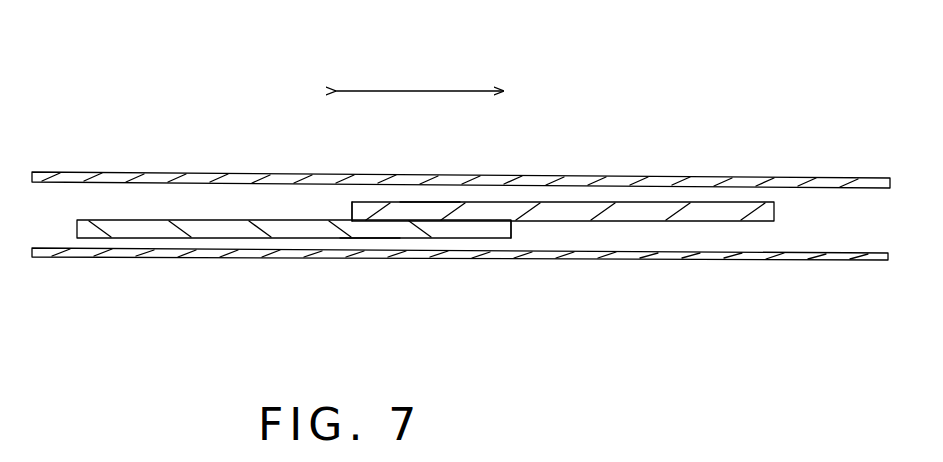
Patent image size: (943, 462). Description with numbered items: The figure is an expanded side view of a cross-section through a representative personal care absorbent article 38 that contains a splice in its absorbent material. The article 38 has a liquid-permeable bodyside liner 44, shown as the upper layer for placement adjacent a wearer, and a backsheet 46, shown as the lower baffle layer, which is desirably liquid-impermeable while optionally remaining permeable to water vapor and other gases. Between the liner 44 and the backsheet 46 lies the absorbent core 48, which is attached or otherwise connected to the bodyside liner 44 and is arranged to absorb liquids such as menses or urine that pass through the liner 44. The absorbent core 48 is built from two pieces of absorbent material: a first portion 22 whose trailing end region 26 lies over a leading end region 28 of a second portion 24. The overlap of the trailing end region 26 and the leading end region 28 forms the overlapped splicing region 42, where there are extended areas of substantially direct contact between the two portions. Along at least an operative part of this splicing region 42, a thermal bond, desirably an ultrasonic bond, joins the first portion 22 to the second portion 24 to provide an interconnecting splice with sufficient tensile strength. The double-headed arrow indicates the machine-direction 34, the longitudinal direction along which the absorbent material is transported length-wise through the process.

The first portion of absorbent material 22 is at (90, 220).
The second portion of absorbent material 24 is at (776, 222).
The trailing end region 26 is at (370, 240).
The leading end region 28 is at (428, 202).
The machine-direction 34 is at (430, 88).
The personal care absorbent article 38 is at (638, 148).
The overlapped splicing region 42 is at (520, 228).
The bodyside liner 44 is at (853, 176).
The backsheet 46 is at (840, 262).
The absorbent core 48 is at (362, 202).